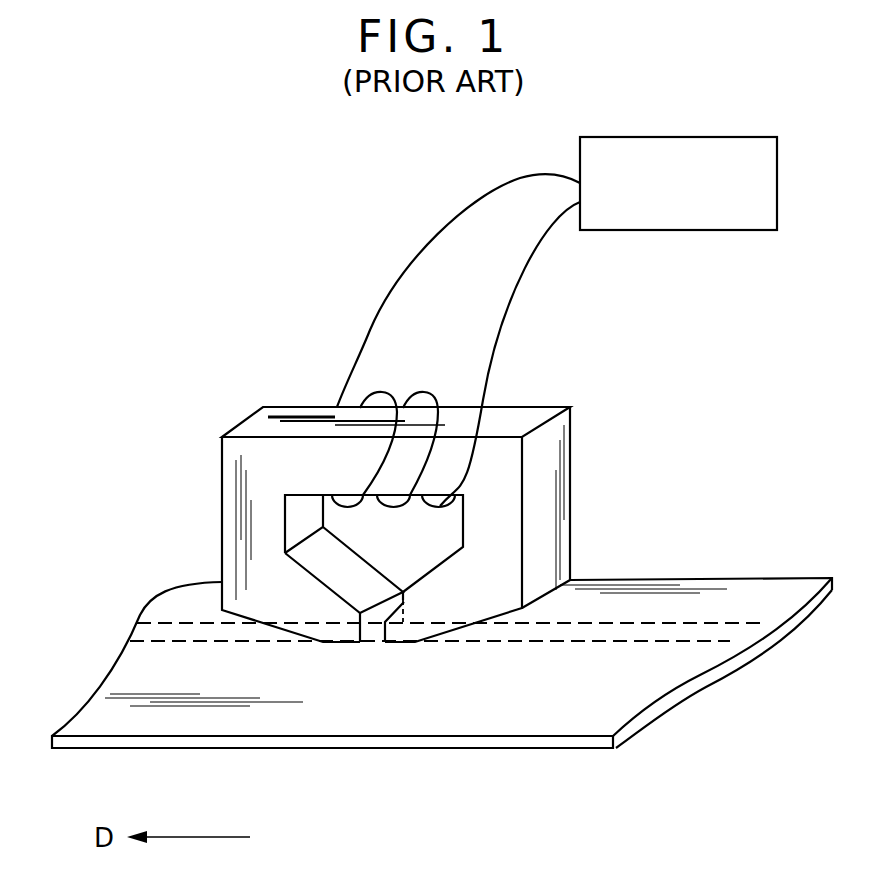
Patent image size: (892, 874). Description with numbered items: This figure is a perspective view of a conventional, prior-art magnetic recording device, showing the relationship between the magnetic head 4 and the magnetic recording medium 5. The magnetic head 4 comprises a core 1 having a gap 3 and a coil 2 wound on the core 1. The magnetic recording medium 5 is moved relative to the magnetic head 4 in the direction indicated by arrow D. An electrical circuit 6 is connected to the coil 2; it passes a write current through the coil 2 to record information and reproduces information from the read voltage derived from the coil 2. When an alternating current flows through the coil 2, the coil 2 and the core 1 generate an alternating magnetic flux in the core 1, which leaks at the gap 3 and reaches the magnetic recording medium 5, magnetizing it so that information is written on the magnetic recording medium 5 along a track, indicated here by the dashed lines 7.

The core 1 is at (572, 495).
The coil 2 is at (480, 432).
The gap 3 is at (370, 632).
The magnetic head 4 is at (225, 424).
The magnetic recording medium 5 is at (593, 708).
The electrical circuit 6 is at (752, 223).
The track (hidden lines) 7 is at (672, 625).